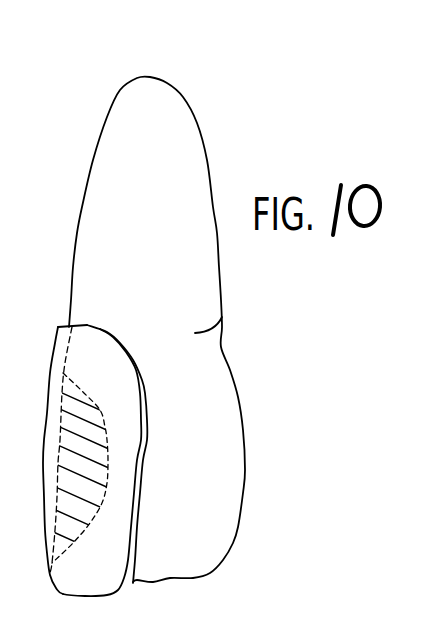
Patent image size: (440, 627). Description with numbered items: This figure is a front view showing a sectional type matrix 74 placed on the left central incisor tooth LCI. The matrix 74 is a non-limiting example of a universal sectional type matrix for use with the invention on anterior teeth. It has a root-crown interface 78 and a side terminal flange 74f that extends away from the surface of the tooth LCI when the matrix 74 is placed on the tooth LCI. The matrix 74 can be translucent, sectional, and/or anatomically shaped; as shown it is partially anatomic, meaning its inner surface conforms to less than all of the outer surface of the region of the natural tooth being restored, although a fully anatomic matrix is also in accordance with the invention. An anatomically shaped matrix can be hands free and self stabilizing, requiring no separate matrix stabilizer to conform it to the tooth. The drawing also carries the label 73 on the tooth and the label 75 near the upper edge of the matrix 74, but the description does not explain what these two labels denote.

The tooth crown lingual surface 73 is at (200, 542).
The orthodontic bracket 74 is at (109, 439).
The bracket flange 74f is at (145, 393).
The bracket upper edge 75 is at (222, 317).
The bracket base pad 78 is at (60, 333).
The lower central incisor LCI is at (174, 329).